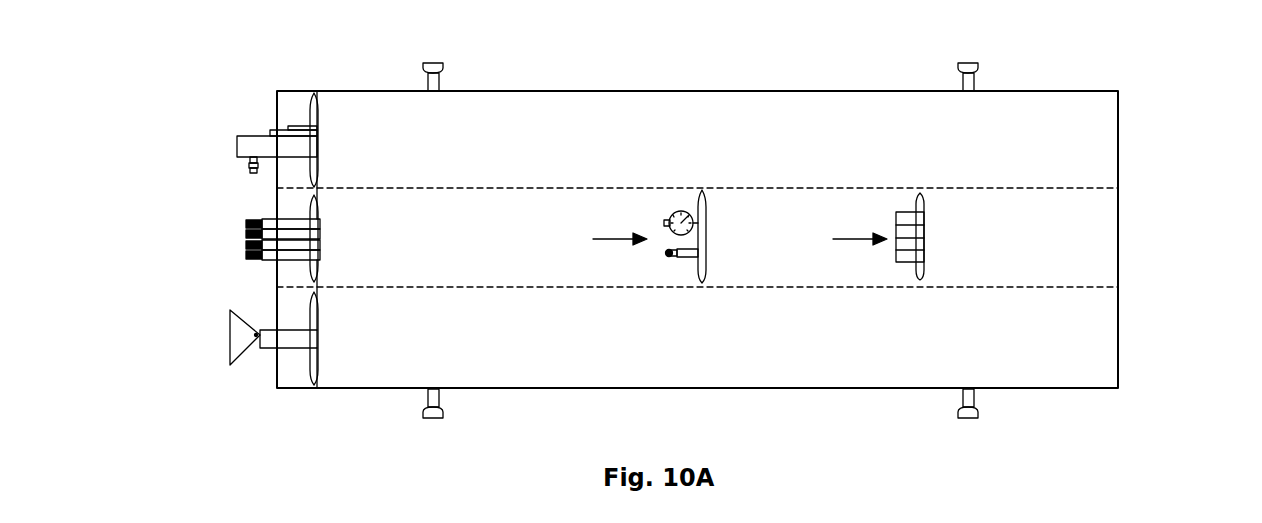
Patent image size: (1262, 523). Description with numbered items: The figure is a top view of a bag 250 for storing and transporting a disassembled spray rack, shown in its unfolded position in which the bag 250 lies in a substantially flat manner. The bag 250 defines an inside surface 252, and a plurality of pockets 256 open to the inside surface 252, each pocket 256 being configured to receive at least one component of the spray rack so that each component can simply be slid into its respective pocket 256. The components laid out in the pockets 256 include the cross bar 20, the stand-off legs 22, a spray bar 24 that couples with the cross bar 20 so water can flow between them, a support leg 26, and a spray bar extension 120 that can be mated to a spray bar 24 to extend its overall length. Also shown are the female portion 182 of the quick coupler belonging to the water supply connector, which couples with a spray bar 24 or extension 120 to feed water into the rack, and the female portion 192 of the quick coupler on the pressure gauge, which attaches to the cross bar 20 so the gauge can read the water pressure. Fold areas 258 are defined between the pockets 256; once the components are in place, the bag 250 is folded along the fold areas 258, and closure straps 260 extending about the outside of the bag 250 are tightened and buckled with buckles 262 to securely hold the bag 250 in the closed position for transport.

The cross bar 20 is at (240, 139).
The stand-off legs 22 is at (291, 124).
The spray bar 24 is at (270, 233).
The support leg 26 is at (250, 362).
The spray bar extension 120 is at (906, 262).
The female portion of quick coupler 182 is at (673, 209).
The female portion of quick coupler 192 is at (693, 260).
The bag 250 is at (1155, 111).
The inside surface 252 is at (789, 121).
The pockets 256 is at (322, 105).
The fold areas 258 is at (1086, 190).
The closure straps 260 is at (437, 83).
The buckles 262 is at (436, 66).